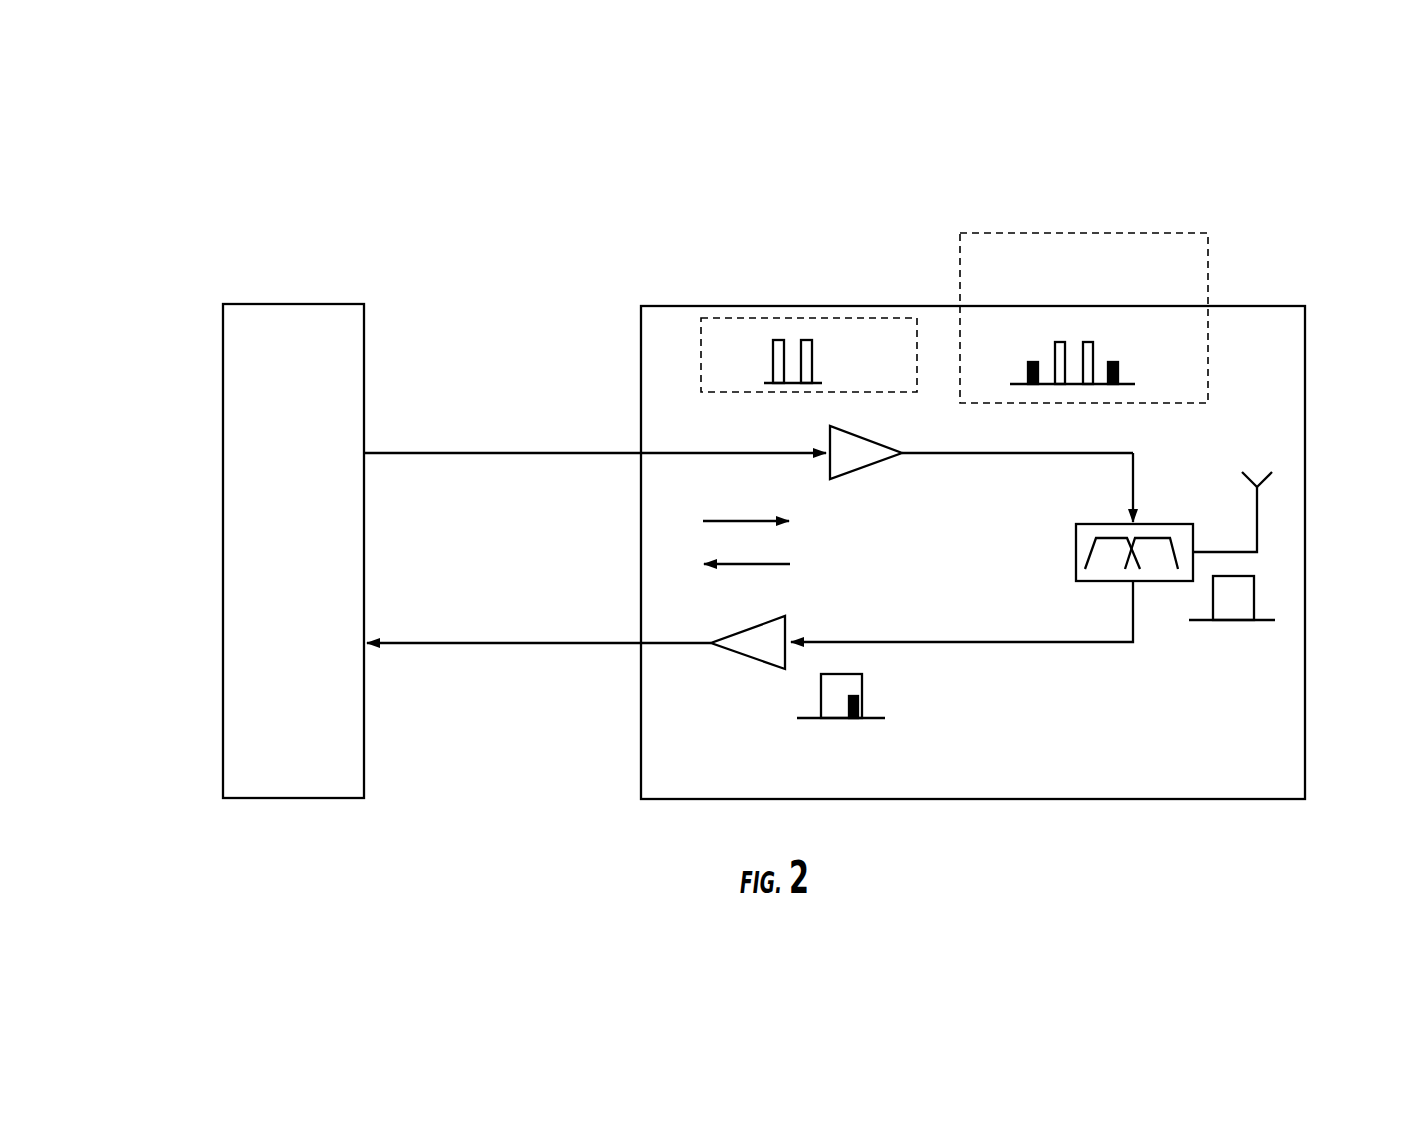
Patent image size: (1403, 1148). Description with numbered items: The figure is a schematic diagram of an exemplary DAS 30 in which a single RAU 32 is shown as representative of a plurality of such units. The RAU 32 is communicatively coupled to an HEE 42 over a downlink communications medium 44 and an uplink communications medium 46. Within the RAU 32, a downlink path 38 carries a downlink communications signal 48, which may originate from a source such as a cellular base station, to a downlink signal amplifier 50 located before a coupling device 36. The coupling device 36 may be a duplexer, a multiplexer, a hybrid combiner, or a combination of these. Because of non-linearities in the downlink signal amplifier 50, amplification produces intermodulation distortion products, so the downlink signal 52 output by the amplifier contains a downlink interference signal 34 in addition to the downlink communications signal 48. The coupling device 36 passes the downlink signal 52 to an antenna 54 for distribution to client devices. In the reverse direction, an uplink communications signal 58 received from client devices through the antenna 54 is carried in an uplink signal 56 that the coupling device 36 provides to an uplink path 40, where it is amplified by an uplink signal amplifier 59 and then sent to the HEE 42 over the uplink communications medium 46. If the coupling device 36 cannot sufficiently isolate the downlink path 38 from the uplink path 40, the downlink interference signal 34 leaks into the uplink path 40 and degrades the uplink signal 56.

The DAS 30 is at (1316, 186).
The RAU 32 is at (1233, 305).
The downlink interference signal 34 is at (1023, 458).
The coupling device 36 is at (1155, 523).
The downlink path 38 is at (735, 520).
The uplink path 40 is at (742, 565).
The HEE 42 is at (295, 303).
The downlink communications medium 44 is at (458, 452).
The uplink communications medium 46 is at (458, 648).
The downlink communications signal 48 is at (591, 451).
The downlink signal amplifier 50 is at (858, 471).
The downlink signal 52 is at (1013, 226).
The antenna 54 is at (1256, 465).
The uplink signal 56 is at (872, 637).
The uplink communications signal 58 is at (1254, 597).
The uplink signal amplifier 59 is at (758, 656).